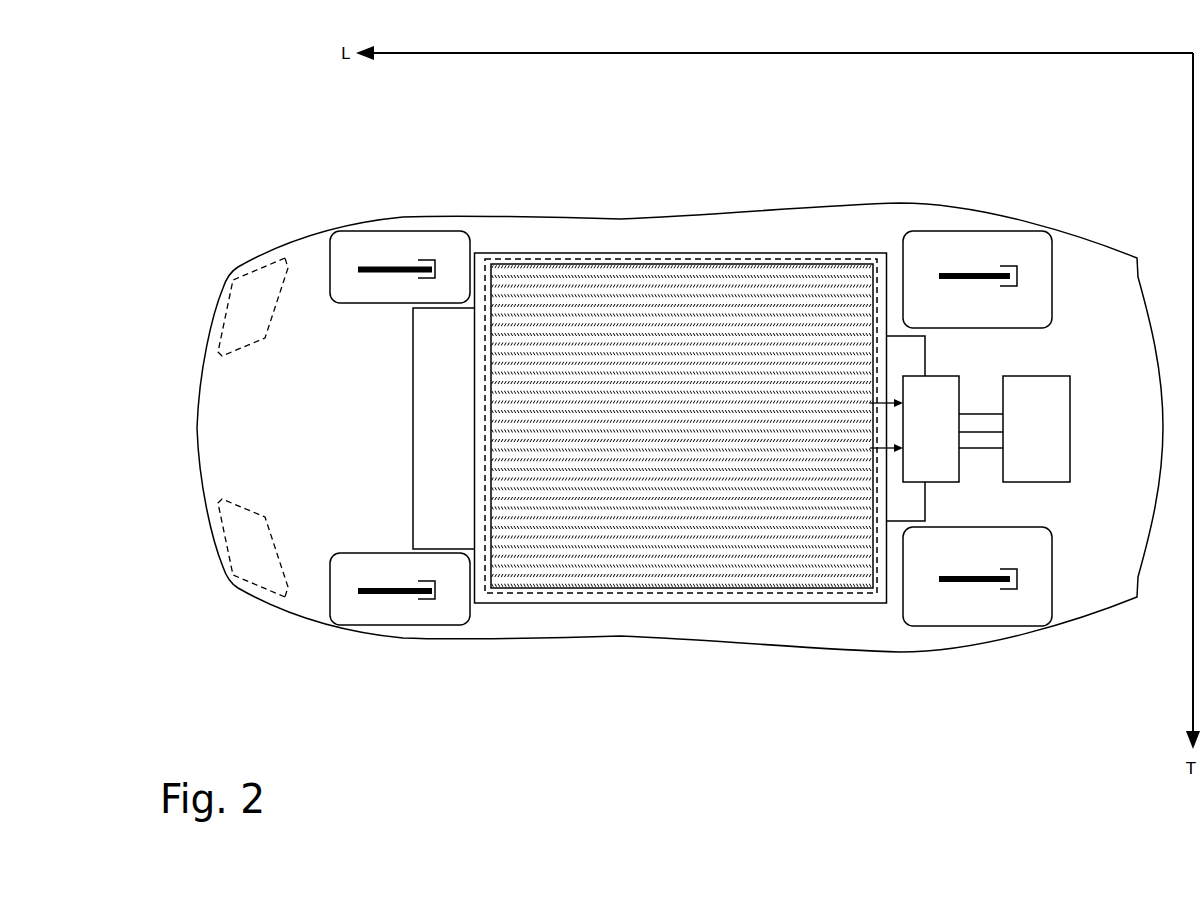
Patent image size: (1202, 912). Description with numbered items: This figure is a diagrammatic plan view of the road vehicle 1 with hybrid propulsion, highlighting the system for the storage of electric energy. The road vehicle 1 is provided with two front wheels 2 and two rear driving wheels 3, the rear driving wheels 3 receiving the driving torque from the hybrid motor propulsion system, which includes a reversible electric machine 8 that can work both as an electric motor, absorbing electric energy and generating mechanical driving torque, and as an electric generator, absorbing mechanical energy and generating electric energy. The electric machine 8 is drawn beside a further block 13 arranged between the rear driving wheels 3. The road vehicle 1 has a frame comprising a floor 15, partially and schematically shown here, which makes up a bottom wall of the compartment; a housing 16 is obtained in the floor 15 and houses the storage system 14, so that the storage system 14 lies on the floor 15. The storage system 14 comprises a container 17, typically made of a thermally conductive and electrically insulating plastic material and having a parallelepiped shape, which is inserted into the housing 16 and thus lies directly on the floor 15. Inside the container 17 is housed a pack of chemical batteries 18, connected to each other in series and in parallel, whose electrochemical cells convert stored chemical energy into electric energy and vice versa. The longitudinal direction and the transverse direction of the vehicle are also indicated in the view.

The road vehicle 1 is at (968, 762).
The front wheels 2 is at (396, 242).
The rear driving wheels 3 is at (981, 242).
The electric machine 8 is at (1014, 429).
The power electronics 13 is at (914, 429).
The storage system 14 is at (681, 488).
The floor 15 is at (559, 604).
The housing 16 is at (842, 598).
The container 17 is at (668, 588).
The chemical batteries 18 is at (731, 572).